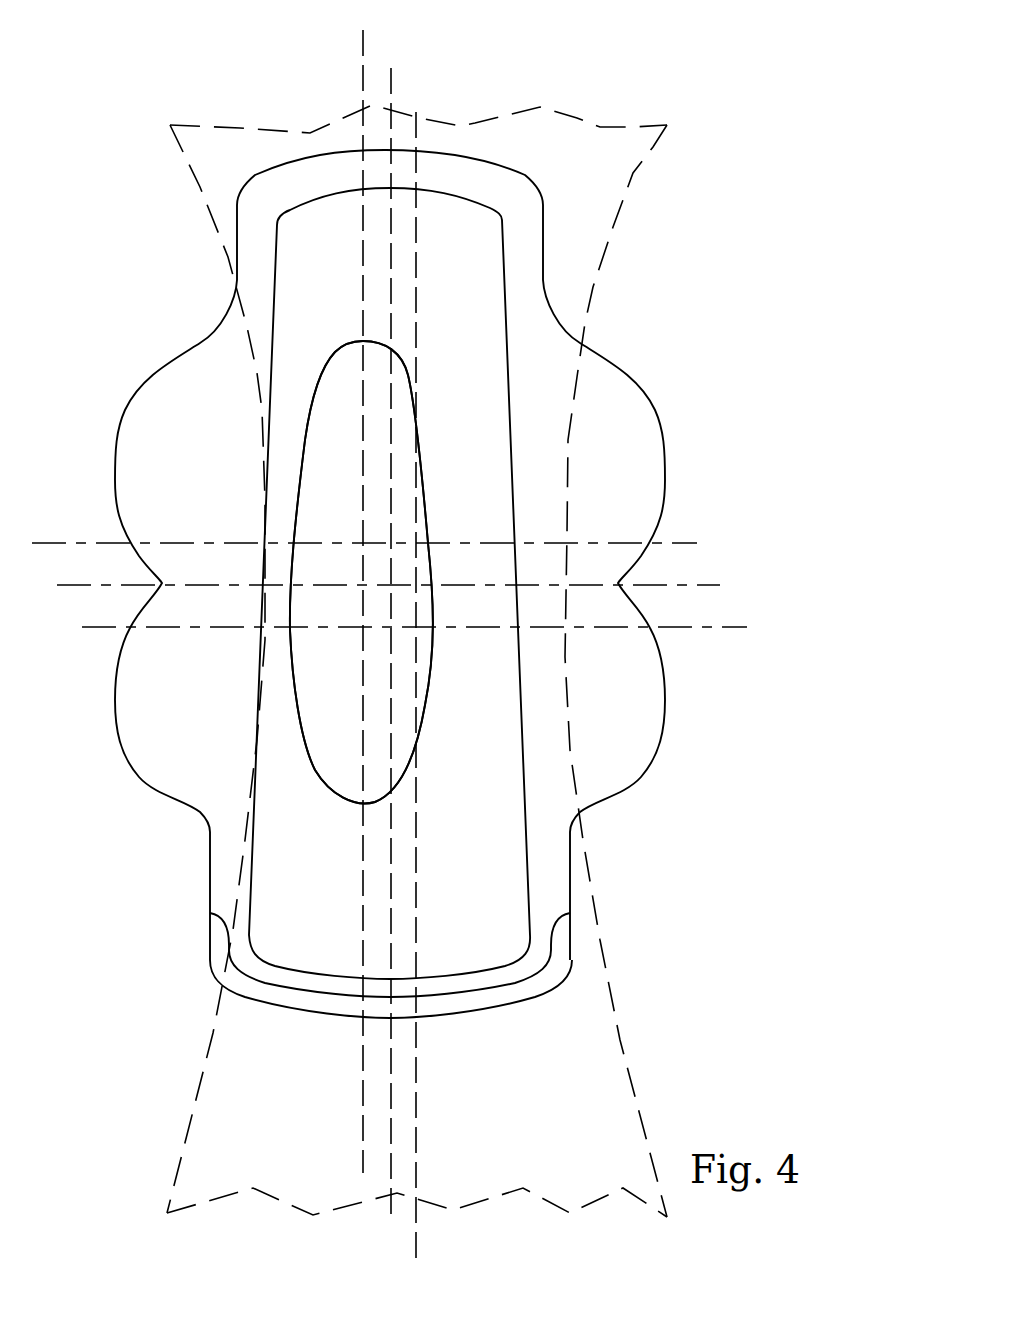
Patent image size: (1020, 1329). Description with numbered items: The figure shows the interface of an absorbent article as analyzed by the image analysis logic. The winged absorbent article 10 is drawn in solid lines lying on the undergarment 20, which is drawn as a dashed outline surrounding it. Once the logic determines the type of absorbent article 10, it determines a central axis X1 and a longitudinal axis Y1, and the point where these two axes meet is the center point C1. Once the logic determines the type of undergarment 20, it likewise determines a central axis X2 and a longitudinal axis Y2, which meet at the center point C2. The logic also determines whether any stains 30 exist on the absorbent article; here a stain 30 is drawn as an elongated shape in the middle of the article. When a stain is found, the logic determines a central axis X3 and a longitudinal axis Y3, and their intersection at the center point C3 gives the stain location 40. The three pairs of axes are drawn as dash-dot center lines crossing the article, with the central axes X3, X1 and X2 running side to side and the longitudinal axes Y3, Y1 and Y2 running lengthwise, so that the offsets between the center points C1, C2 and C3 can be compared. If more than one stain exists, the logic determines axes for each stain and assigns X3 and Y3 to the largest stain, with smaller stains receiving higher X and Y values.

The absorbent article 10 is at (680, 268).
The undergarment 20 is at (670, 122).
The stain 30 is at (310, 423).
The stain location 40 is at (298, 713).
The center point of the absorbent article C1 is at (395, 578).
The center point of the undergarment C2 is at (426, 638).
The center point of the stain C3 is at (348, 533).
The central axis of the absorbent article X1 is at (407, 585).
The central axis of the undergarment X2 is at (432, 629).
The central axis of the stain X3 is at (383, 545).
The longitudinal axis of the absorbent article Y1 is at (389, 628).
The longitudinal axis of the undergarment Y2 is at (414, 670).
The longitudinal axis of the stain Y3 is at (362, 586).